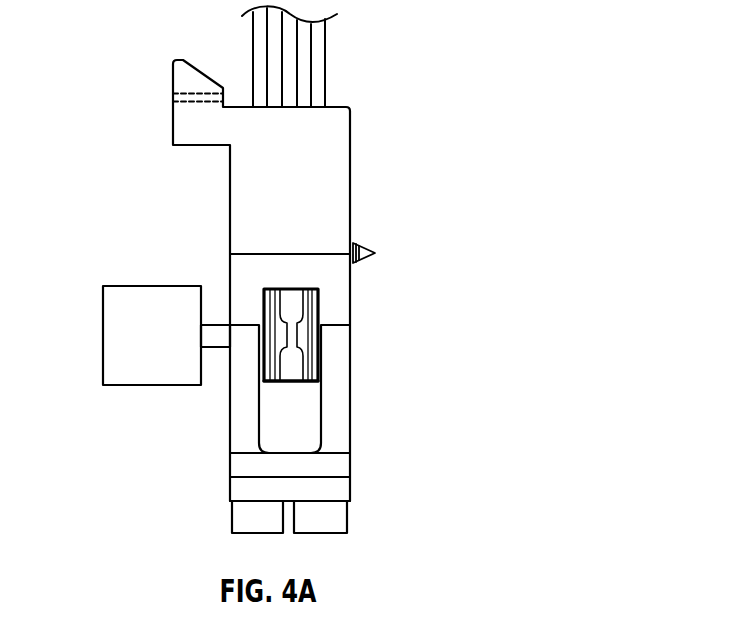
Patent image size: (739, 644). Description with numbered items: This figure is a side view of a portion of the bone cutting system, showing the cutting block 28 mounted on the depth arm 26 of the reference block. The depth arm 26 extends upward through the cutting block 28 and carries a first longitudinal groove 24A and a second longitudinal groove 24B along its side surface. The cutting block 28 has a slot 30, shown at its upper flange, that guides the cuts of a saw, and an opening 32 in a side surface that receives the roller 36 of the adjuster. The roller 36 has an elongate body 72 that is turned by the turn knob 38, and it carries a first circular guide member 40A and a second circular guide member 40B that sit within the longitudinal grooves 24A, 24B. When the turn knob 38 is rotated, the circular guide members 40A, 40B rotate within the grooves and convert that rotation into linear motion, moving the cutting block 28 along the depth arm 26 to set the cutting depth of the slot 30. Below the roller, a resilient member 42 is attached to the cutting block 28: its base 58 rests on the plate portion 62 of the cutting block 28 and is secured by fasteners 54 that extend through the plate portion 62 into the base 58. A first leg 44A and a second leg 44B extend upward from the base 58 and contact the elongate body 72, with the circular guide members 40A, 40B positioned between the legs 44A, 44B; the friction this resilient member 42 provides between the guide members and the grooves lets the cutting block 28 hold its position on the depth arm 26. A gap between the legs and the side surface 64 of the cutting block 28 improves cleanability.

The depth arm 26 is at (288, 56).
The first longitudinal groove 24A is at (308, 80).
The second longitudinal groove 24B is at (273, 62).
The cutting block 28 is at (342, 177).
The slot 30 is at (192, 104).
The roller 36 is at (136, 314).
The turn knob 38 is at (112, 336).
The elongate body 72 is at (213, 333).
The first circular guide member 40A is at (348, 319).
The second circular guide member 40B is at (274, 297).
The opening 32 is at (309, 391).
The resilient member 42 is at (292, 429).
The first leg 44A is at (338, 362).
The second leg 44B is at (237, 393).
The side surface 64 is at (305, 436).
The base 58 is at (238, 465).
The plate portion 62 is at (238, 488).
The fasteners 54 is at (337, 517).